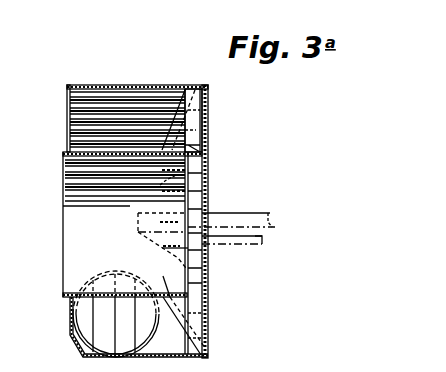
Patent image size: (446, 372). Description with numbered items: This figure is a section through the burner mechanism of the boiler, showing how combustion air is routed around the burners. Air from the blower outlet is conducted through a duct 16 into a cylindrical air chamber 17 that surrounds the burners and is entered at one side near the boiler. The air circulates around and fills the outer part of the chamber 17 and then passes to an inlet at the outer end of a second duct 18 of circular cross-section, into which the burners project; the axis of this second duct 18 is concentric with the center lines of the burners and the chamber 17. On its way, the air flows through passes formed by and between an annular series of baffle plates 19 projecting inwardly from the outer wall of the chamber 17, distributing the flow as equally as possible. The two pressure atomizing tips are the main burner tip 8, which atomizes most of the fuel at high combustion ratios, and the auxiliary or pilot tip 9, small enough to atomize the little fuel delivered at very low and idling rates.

The cylindrical air chamber 17 is at (120, 103).
The second duct 18 is at (97, 162).
The baffle plates 19 is at (190, 116).
The main burner tip 8 is at (240, 223).
The auxiliary burner tip 9 is at (258, 238).
The duct 16 is at (95, 320).